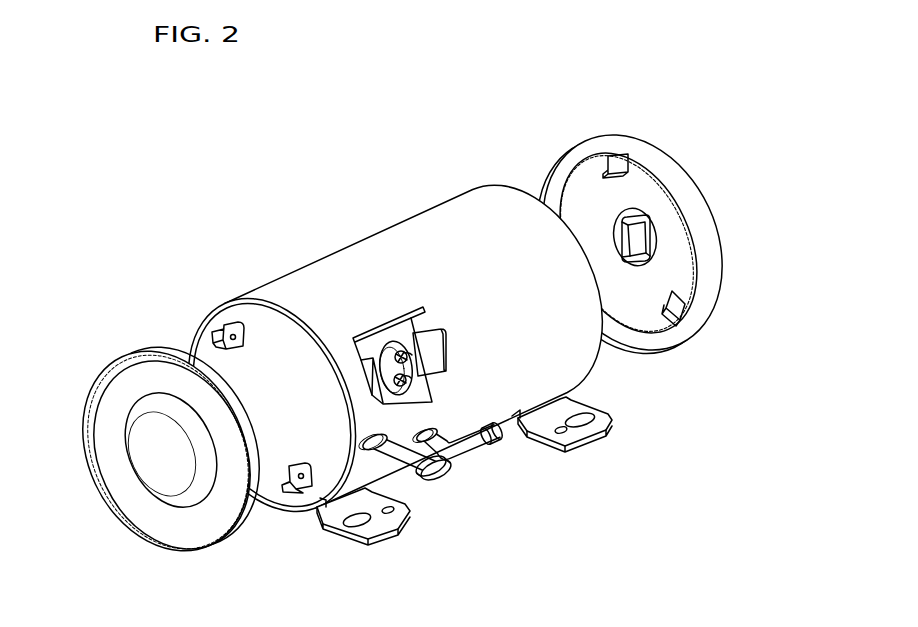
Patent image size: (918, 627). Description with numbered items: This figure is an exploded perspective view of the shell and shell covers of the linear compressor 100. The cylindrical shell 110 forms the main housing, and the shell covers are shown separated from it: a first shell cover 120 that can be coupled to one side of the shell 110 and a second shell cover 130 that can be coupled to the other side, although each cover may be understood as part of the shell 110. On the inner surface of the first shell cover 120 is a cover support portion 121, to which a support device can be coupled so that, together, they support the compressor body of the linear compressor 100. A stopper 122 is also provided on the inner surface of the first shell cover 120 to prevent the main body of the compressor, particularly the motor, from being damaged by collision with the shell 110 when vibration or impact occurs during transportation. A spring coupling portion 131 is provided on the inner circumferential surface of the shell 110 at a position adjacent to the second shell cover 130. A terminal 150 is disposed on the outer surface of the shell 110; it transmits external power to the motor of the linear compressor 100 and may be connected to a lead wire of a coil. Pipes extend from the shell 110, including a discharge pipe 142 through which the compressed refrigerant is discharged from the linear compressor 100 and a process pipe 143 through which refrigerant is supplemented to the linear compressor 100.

The linear compressor 100 is at (252, 248).
The shell 110 is at (312, 273).
The first shell cover 120 is at (638, 236).
The cover support portion 121 is at (650, 242).
The stopper 122 is at (615, 157).
The second shell cover 130 is at (96, 414).
The spring coupling portion 131 is at (224, 327).
The discharge pipe 142 is at (465, 452).
The process pipe 143 is at (410, 470).
The terminal 150 is at (367, 330).